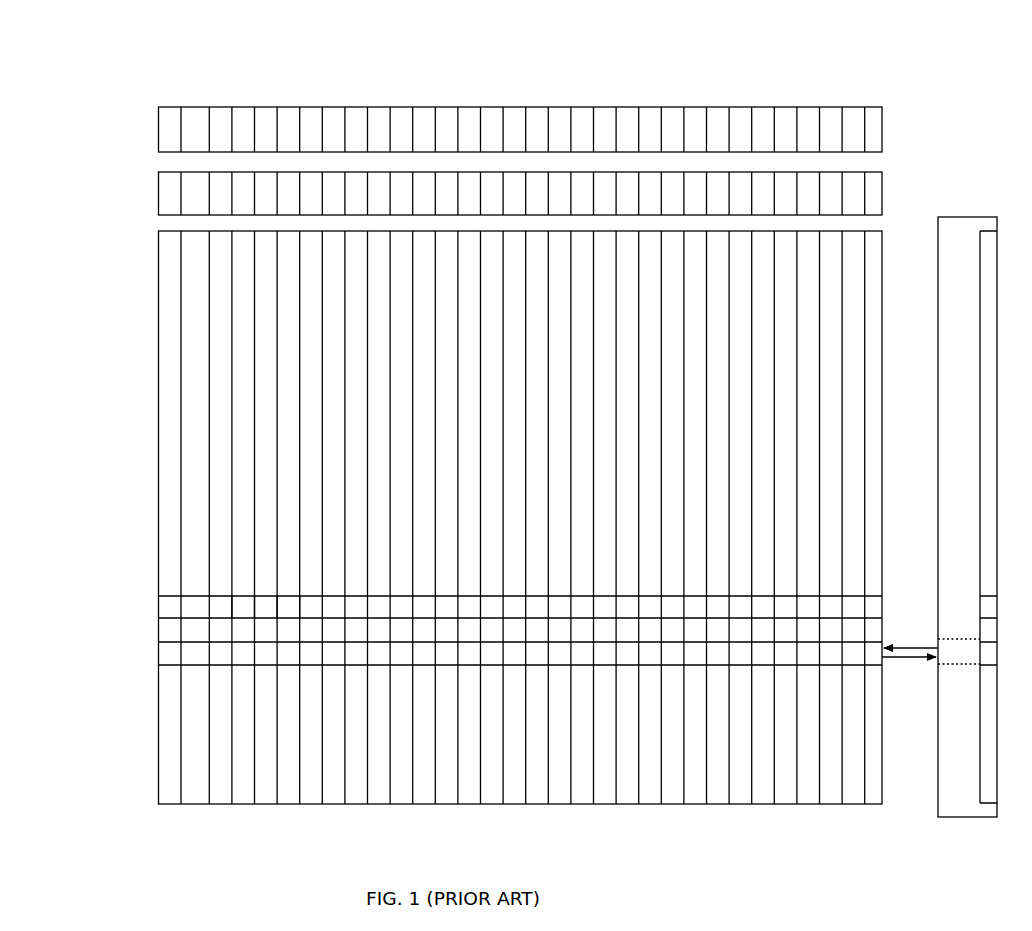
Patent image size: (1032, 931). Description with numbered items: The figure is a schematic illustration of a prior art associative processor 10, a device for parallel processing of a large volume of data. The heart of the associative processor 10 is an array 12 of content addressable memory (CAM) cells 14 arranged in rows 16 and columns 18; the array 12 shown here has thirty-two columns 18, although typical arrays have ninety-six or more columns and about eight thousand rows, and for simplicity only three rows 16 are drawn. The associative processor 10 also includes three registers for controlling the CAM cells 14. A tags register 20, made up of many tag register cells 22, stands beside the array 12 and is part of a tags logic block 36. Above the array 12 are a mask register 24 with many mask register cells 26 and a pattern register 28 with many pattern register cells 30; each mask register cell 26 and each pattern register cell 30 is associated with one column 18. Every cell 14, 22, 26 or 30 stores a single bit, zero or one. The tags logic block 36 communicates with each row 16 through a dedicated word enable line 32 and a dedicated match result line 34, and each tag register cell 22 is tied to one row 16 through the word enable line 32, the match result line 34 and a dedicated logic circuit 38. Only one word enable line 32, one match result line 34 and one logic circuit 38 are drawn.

The associative processor 10 is at (930, 107).
The array 12 is at (887, 258).
The content addressable memory (CAM) cells 14 is at (242, 600).
The rows 16 is at (162, 652).
The columns 18 is at (288, 804).
The tags register 20 is at (998, 262).
The tag register cells 22 is at (992, 652).
The mask register 24 is at (882, 183).
The mask register cells 26 is at (222, 210).
The pattern register 28 is at (883, 109).
The pattern register cells 30 is at (247, 112).
The word enable line 32 is at (911, 637).
The match result line 34 is at (909, 671).
The tags logic block 36 is at (969, 517).
The logic circuit 38 is at (959, 651).